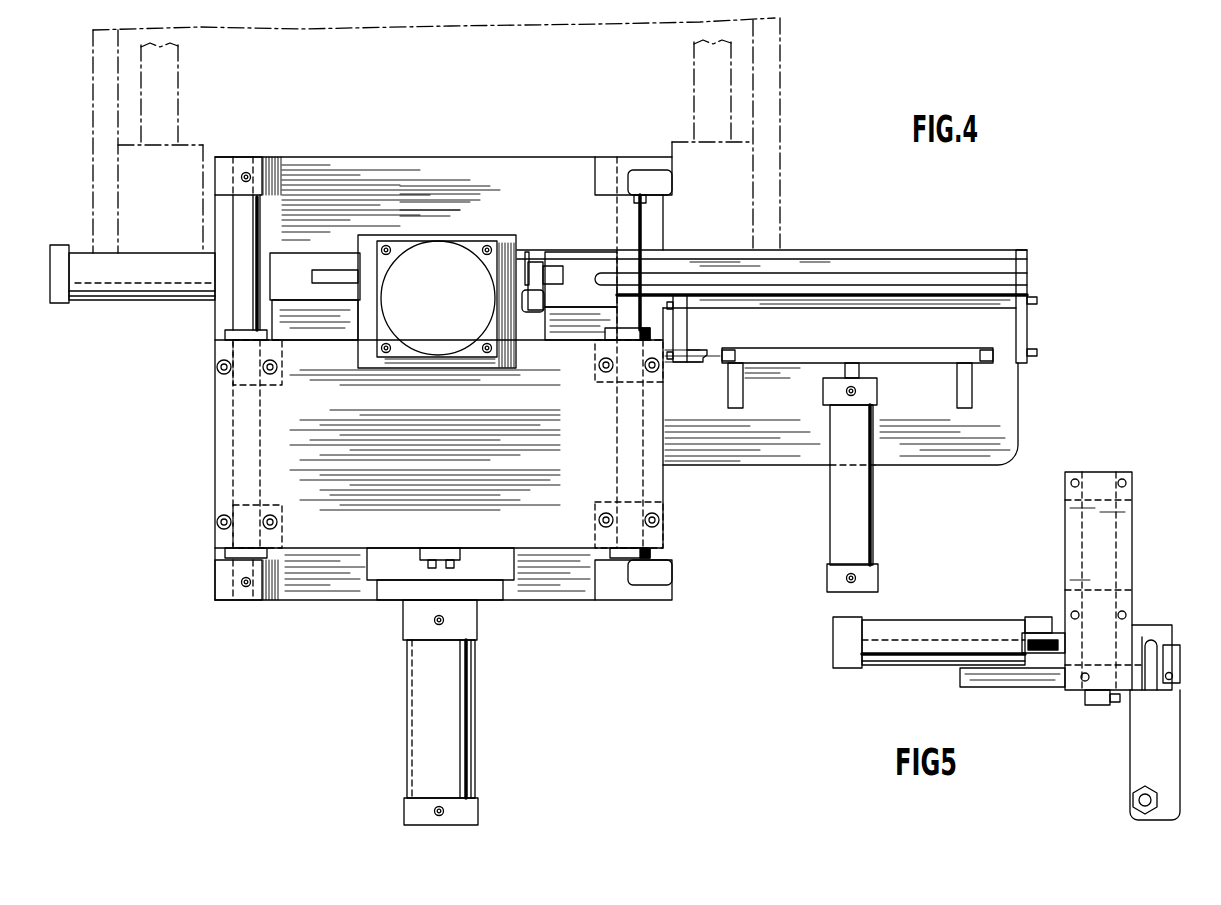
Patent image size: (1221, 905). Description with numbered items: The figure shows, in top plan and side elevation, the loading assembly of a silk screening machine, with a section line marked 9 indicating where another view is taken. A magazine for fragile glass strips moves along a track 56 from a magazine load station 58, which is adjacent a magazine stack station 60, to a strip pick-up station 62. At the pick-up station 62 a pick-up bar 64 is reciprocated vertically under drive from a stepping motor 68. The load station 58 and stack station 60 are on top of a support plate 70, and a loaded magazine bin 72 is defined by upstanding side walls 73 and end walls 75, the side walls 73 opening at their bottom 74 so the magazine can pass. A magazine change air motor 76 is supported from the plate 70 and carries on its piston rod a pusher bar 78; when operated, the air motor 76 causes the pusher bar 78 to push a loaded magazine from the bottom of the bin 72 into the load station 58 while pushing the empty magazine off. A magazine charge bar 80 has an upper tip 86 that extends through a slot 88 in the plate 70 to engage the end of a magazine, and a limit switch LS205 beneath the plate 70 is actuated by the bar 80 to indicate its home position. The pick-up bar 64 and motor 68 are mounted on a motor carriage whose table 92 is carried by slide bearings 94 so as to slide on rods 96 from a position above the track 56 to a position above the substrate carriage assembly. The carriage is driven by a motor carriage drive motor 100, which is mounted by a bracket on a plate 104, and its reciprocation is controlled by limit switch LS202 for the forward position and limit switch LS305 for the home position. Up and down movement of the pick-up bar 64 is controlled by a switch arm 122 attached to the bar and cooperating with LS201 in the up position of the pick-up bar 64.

In FIG. 4, the plate 104 is at (503, 165).
In FIG. 4, the limit switch LS202 is at (668, 182).
In FIG. 4, the strip pick-up station 62 is at (526, 254).
In FIG. 4, the switch arm 122 is at (538, 268).
In FIG. 4, the rods 96 is at (222, 257).
In FIG. 4, the track 56 is at (588, 272).
In FIG. 4, the magazine load station 58 is at (850, 262).
In FIG. 4, the slot 88 is at (953, 275).
In FIG. 4, the pick-up bar 64 is at (323, 270).
In FIG. 4, the stepping motor 68 is at (437, 301).
In FIG. 4, the limit switch LS201 is at (533, 312).
In FIG. 4, the end walls 75 is at (690, 338).
In FIG. 5, the end walls 75 is at (1085, 545).
In FIG. 4, the magazine stack station 60 is at (850, 326).
In FIG. 4, the pusher bar 78 is at (922, 350).
In FIG. 5, the pusher bar 78 is at (1085, 648).
In FIG. 4, the side walls 73 is at (948, 308).
In FIG. 5, the side walls 73 is at (1120, 545).
In FIG. 4, the loaded magazine bin 72 is at (1000, 322).
In FIG. 5, the loaded magazine bin 72 is at (1096, 492).
In FIG. 4, the support plate 70 is at (1018, 437).
In FIG. 5, the support plate 70 is at (1012, 688).
In FIG. 4, the table 92 is at (439, 444).
In FIG. 4, the slide bearings 94 is at (278, 522).
In FIG. 4, the magazine change air motor 76 is at (876, 478).
In FIG. 5, the magazine change air motor 76 is at (970, 620).
In FIG. 4, the limit switch LS305 is at (672, 575).
In FIG. 4, the motor carriage drive motor 100 is at (455, 728).
In FIG. 5, the bottom 74 is at (1133, 624).
In FIG. 5, the upper tip 86 is at (1172, 645).
In FIG. 5, the magazine charge bar 80 is at (1180, 755).
In FIG. 5, the limit switch LS205 is at (1090, 705).
In FIG. 4, the section line 9 is at (443, 227).